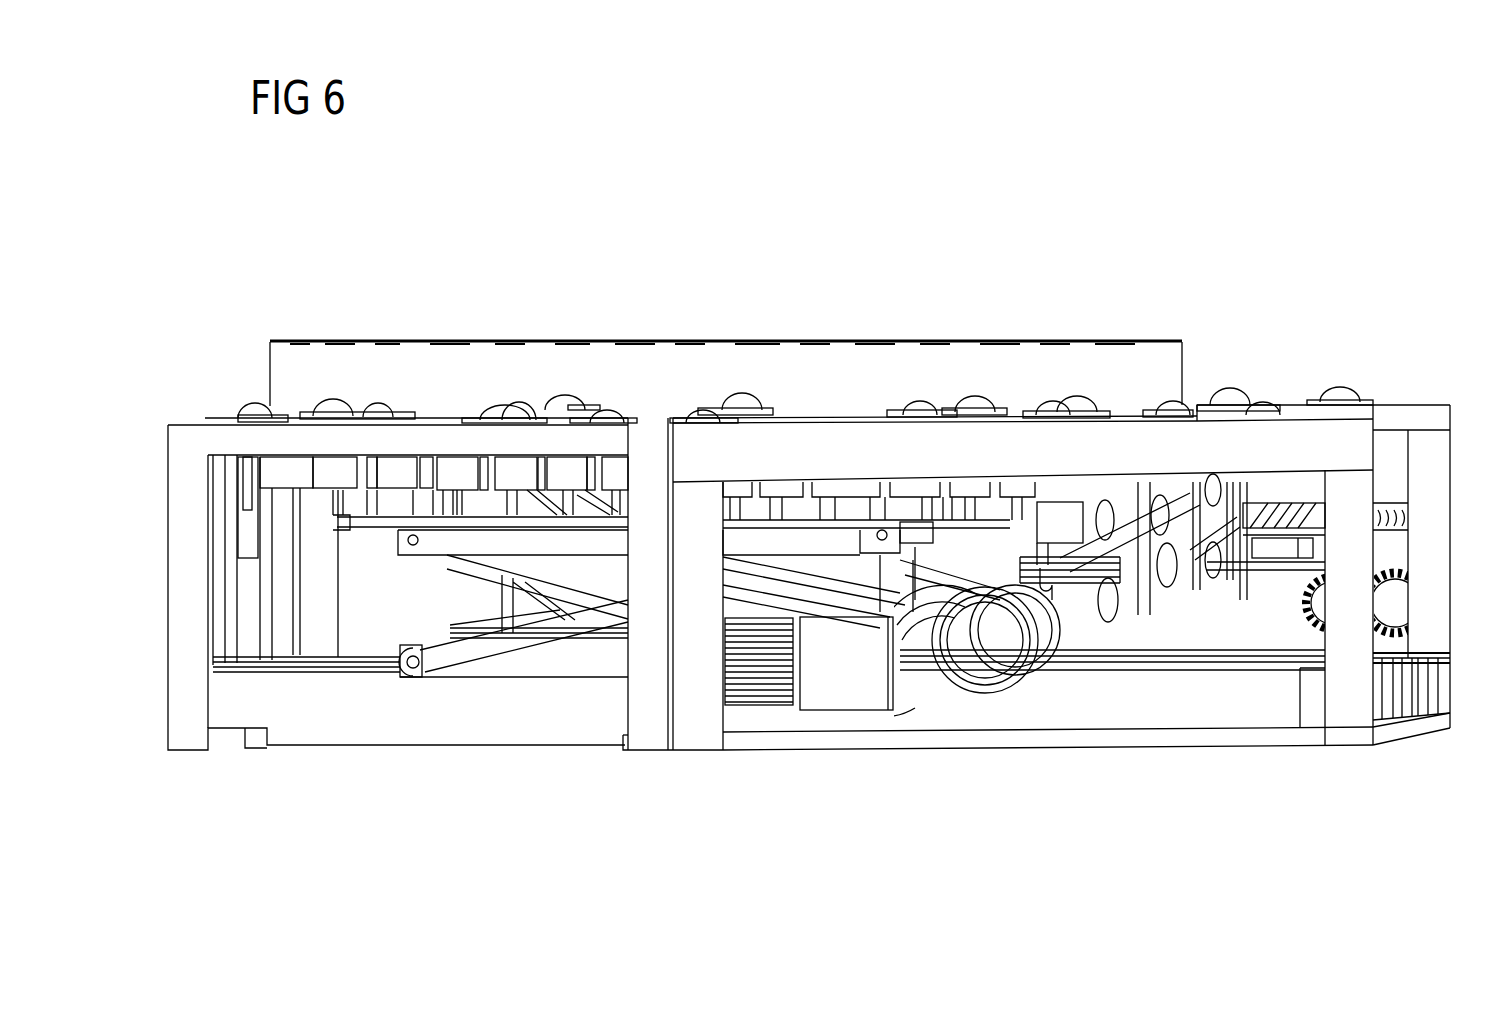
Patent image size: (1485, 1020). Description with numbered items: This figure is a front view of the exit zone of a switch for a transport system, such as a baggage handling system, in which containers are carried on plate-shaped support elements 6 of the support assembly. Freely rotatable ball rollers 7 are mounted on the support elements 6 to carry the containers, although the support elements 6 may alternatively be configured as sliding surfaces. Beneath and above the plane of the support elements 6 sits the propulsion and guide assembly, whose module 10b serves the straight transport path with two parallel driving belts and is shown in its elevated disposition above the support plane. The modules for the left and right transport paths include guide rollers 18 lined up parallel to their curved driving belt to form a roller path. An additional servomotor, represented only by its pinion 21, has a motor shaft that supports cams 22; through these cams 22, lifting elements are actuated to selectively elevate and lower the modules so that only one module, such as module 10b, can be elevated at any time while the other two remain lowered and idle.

The support element 6 is at (177, 437).
The ball roller 7 is at (255, 403).
The module 10b is at (468, 352).
The guide roller 18 is at (457, 467).
The pinion 21 is at (762, 690).
The cam 22 is at (930, 610).